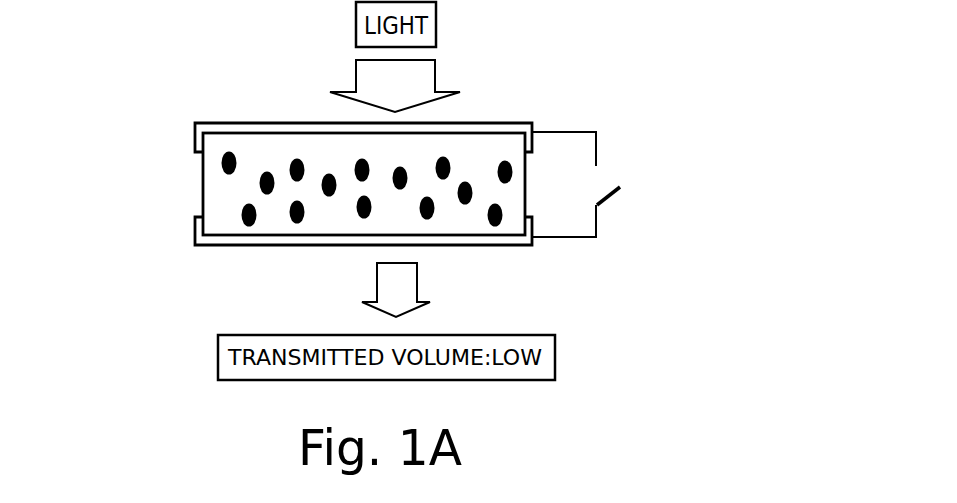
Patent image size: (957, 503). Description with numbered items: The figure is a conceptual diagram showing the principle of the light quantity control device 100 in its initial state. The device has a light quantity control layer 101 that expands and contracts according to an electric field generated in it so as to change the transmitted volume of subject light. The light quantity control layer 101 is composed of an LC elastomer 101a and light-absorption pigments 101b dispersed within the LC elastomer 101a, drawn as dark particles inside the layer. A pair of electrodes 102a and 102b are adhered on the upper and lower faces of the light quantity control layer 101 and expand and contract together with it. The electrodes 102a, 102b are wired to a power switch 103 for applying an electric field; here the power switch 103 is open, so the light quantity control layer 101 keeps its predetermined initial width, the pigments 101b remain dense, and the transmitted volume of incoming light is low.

The light quantity control device 100 is at (122, 139).
The light quantity control layer 101 is at (545, 178).
The liquid crystal elastomer 101a is at (213, 197).
The light-absorption pigments 101b is at (247, 218).
The electrode 102a is at (508, 130).
The electrode 102b is at (523, 247).
The power switch 103 is at (612, 193).